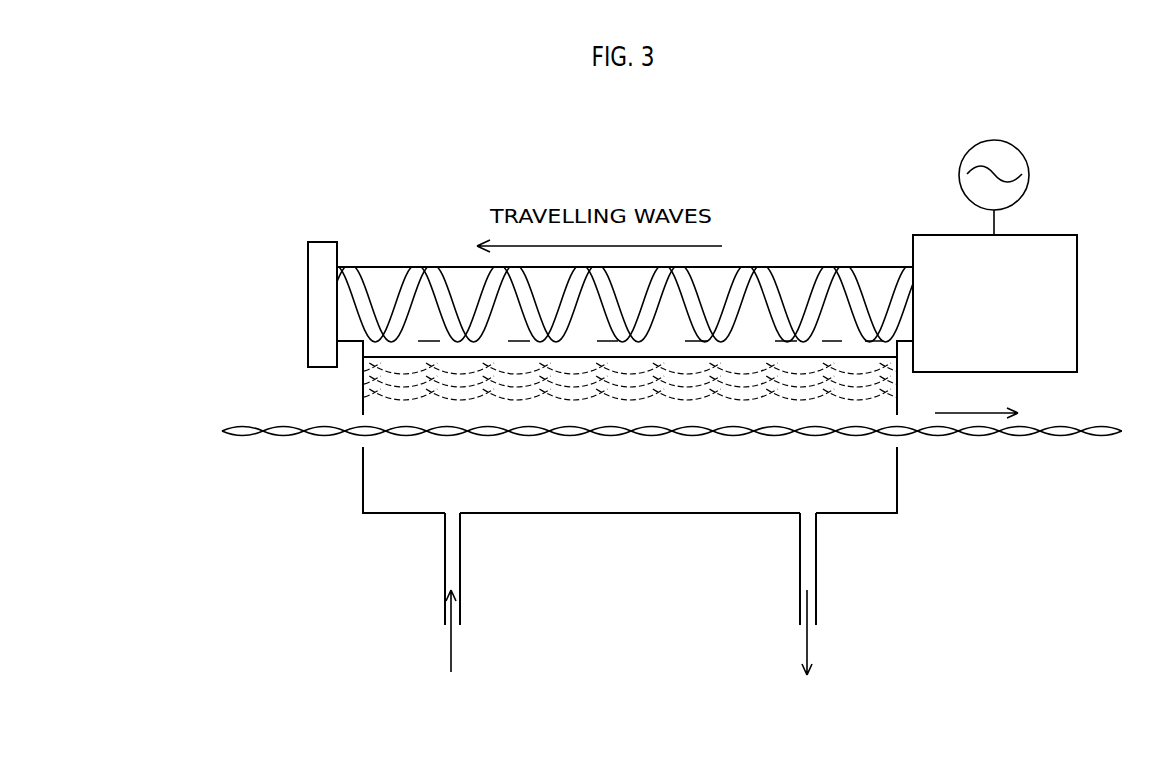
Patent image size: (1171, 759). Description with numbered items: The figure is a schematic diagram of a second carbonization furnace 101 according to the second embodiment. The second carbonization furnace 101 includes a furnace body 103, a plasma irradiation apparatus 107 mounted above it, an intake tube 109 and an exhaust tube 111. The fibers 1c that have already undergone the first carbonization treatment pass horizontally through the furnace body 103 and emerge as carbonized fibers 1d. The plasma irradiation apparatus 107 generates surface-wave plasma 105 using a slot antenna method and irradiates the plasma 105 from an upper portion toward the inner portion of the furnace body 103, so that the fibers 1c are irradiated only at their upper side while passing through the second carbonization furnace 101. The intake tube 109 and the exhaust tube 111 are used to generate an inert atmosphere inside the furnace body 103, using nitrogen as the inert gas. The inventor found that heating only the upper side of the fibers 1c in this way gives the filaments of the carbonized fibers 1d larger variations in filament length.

The second carbonization furnace 101 is at (814, 197).
The furnace body 103 is at (383, 503).
The plasma 105 is at (362, 403).
The plasma irradiation apparatus 107 is at (1071, 186).
The intake tube 109 is at (447, 575).
The exhaust tube 111 is at (800, 572).
The fibers that have undergone the first carbonization treatment 1c is at (285, 437).
The carbonized fibers 1d is at (977, 437).